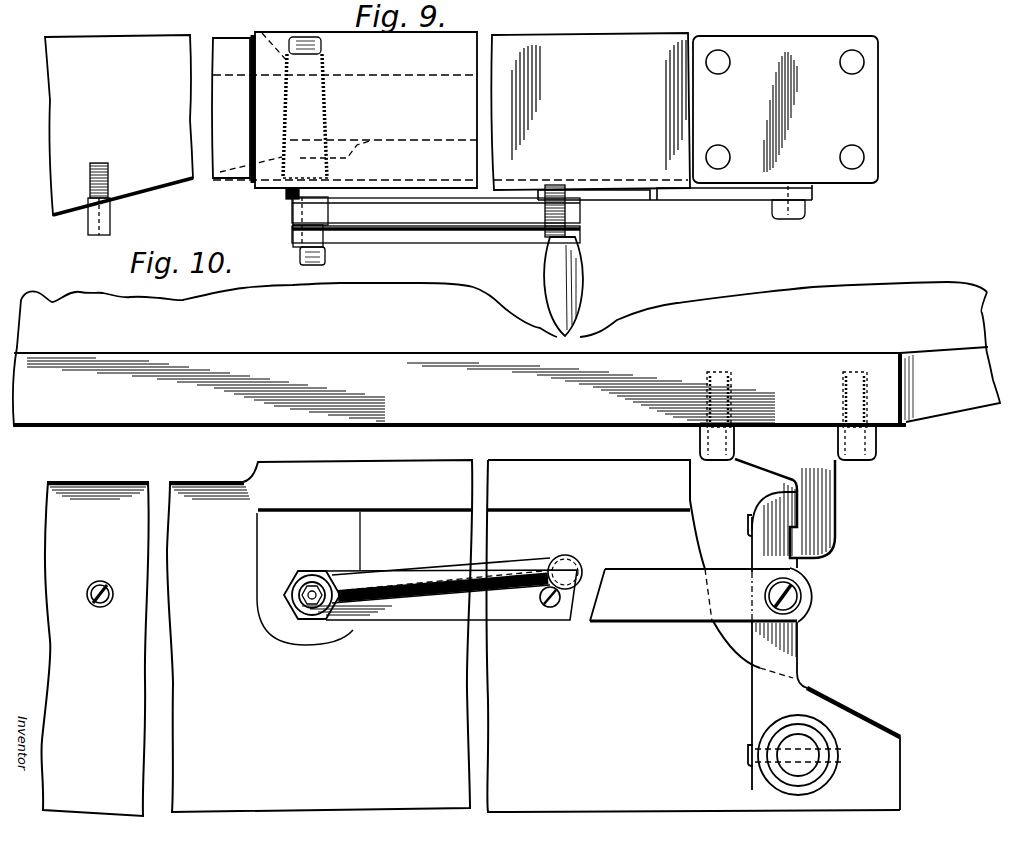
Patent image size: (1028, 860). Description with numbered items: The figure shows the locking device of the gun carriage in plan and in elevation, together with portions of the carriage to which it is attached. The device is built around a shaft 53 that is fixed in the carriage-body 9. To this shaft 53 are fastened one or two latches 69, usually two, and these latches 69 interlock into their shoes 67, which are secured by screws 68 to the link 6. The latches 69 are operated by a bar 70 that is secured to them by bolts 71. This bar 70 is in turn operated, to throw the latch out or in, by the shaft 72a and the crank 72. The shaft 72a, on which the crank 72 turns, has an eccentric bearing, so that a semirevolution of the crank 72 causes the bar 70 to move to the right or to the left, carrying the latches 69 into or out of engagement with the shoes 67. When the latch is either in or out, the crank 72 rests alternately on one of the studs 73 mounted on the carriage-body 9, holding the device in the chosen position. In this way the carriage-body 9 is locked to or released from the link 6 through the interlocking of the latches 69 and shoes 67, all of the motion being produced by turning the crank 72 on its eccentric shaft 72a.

In FIG. 10, the link 6 is at (506, 354).
In FIG. 9, the carriage-body 9 is at (367, 123).
In FIG. 10, the carriage-body 9 is at (470, 638).
In FIG. 10, the shaft 53 is at (800, 755).
In FIG. 9, the shoes 67 is at (785, 109).
In FIG. 10, the shoes 67 is at (834, 515).
In FIG. 10, the screws 68 is at (792, 431).
In FIG. 10, the latches 69 is at (800, 645).
In FIG. 9, the bar 70 is at (711, 193).
In FIG. 10, the bar 70 is at (693, 595).
In FIG. 9, the bolts 71 is at (800, 212).
In FIG. 10, the bolts 71 is at (792, 595).
In FIG. 9, the crank 72 is at (433, 230).
In FIG. 10, the crank 72 is at (447, 560).
In FIG. 9, the shaft 72a is at (305, 107).
In FIG. 10, the shaft 72a is at (290, 610).
In FIG. 9, the studs 73 is at (108, 217).
In FIG. 10, the studs 73 is at (103, 578).